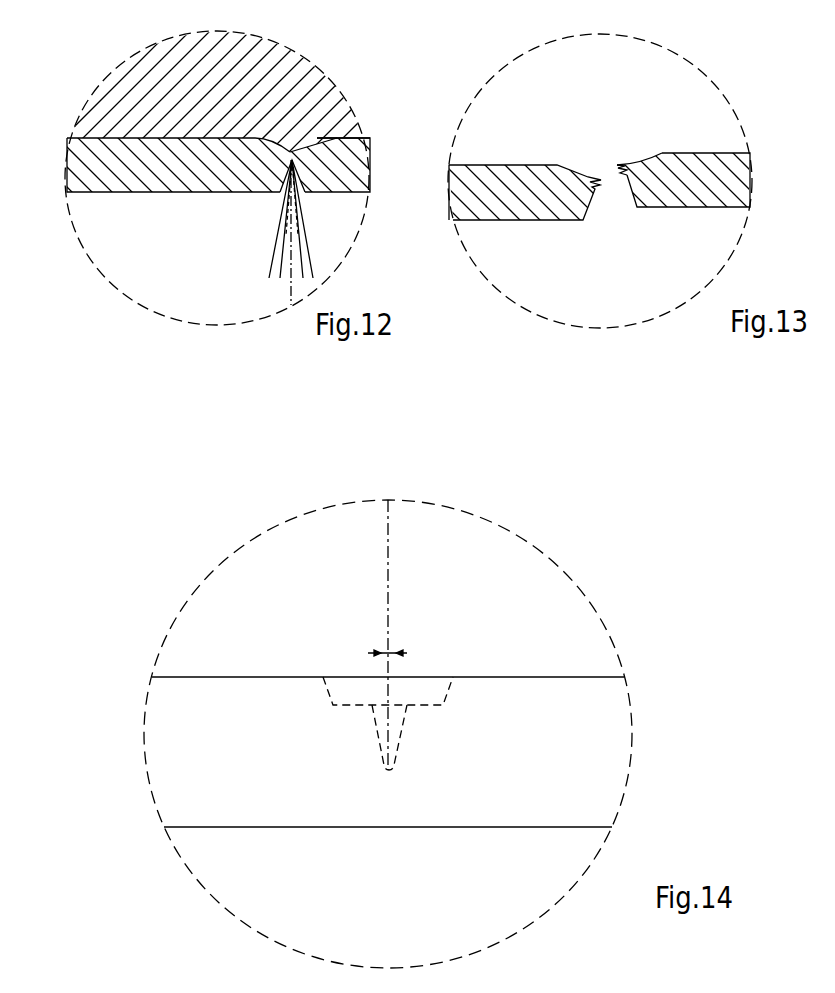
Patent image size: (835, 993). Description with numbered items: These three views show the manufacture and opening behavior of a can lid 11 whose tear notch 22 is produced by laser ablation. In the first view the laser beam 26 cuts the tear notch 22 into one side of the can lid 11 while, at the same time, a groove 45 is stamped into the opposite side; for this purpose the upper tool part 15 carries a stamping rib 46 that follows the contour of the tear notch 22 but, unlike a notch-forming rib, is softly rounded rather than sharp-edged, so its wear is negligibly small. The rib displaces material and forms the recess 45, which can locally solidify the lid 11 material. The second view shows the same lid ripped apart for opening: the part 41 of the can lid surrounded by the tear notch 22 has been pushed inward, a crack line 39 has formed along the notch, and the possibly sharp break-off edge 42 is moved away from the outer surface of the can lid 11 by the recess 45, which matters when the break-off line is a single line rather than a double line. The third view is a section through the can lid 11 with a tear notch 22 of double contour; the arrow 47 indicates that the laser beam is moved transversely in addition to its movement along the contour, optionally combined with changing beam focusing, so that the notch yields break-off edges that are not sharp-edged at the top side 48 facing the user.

In FIG. 12, the can lid 11 is at (75, 173).
In FIG. 13, the can lid 11 is at (723, 163).
In FIG. 14, the can lid 11 is at (592, 782).
In FIG. 12, the upper tool part 15 is at (298, 70).
In FIG. 12, the stamping rib 46 is at (342, 98).
In FIG. 12, the groove 45 is at (320, 139).
In FIG. 13, the groove 45 is at (642, 158).
In FIG. 12, the tear notch 22 is at (275, 207).
In FIG. 14, the tear notch 22 is at (448, 647).
In FIG. 12, the laser beam 26 is at (303, 250).
In FIG. 13, the part of the can lid surrounded by the tear notch 41 is at (508, 173).
In FIG. 13, the crack line 39 is at (606, 166).
In FIG. 13, the break-off edge 42 is at (622, 180).
In FIG. 14, the arrow 47 is at (390, 652).
In FIG. 14, the top side 48 is at (517, 677).